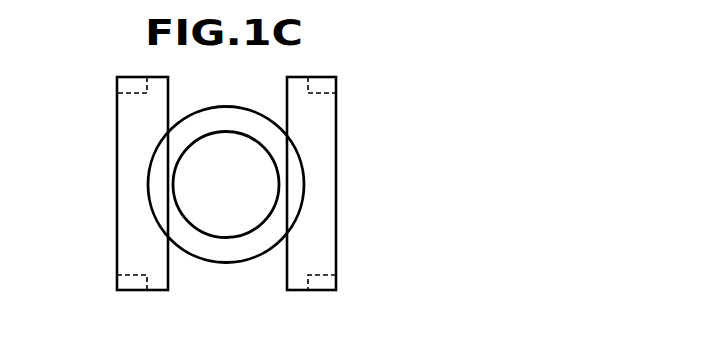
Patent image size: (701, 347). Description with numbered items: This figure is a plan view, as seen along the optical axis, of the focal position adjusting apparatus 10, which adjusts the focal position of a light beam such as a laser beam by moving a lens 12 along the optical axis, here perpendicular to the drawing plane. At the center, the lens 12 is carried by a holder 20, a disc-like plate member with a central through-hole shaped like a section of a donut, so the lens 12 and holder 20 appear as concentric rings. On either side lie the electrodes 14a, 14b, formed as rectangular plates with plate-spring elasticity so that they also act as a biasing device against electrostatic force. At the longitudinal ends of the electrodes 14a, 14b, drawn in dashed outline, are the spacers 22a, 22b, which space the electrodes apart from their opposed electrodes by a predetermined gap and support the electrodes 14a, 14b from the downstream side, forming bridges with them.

The focal position adjusting apparatus 10 is at (253, 195).
The lens 12 is at (227, 225).
The electrode 14a is at (140, 208).
The electrode 14b is at (327, 188).
The holder 20 is at (208, 117).
The spacer 22a is at (118, 95).
The spacer 22b is at (336, 79).